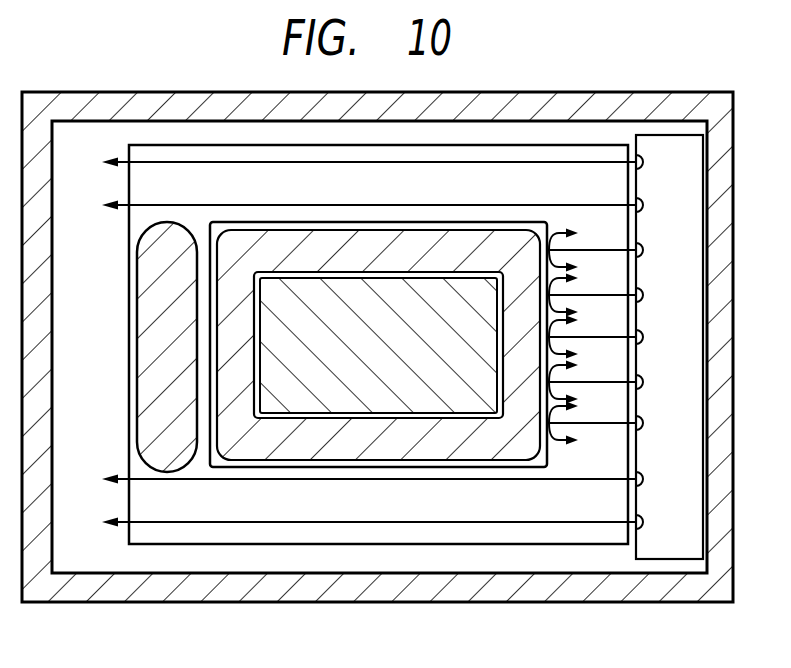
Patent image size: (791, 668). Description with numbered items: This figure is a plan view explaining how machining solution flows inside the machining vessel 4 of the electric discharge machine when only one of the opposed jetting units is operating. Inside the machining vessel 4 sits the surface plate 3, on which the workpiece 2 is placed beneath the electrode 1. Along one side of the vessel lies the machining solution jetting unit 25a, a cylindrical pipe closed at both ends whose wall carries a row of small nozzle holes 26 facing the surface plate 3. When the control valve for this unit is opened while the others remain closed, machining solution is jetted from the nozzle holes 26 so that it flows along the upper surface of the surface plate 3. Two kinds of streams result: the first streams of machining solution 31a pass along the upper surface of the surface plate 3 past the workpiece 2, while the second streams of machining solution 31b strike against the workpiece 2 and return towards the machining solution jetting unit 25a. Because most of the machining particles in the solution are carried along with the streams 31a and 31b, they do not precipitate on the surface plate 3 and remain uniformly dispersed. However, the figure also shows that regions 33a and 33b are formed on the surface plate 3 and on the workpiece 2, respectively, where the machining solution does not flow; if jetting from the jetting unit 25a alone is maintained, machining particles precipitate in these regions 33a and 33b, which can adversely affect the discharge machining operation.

The electrode 1 is at (312, 405).
The workpiece 2 is at (244, 467).
The surface plate 3 is at (355, 540).
The machining vessel 4 is at (478, 590).
The machining solution jetting unit 25a is at (673, 545).
The nozzle holes 26 is at (650, 204).
The first streams of machining solution 31a is at (122, 159).
The second streams of machining solution 31b is at (597, 430).
The region where the machining solution does not flow 33a is at (152, 355).
The region where the machining solution does not flow 33b is at (235, 252).